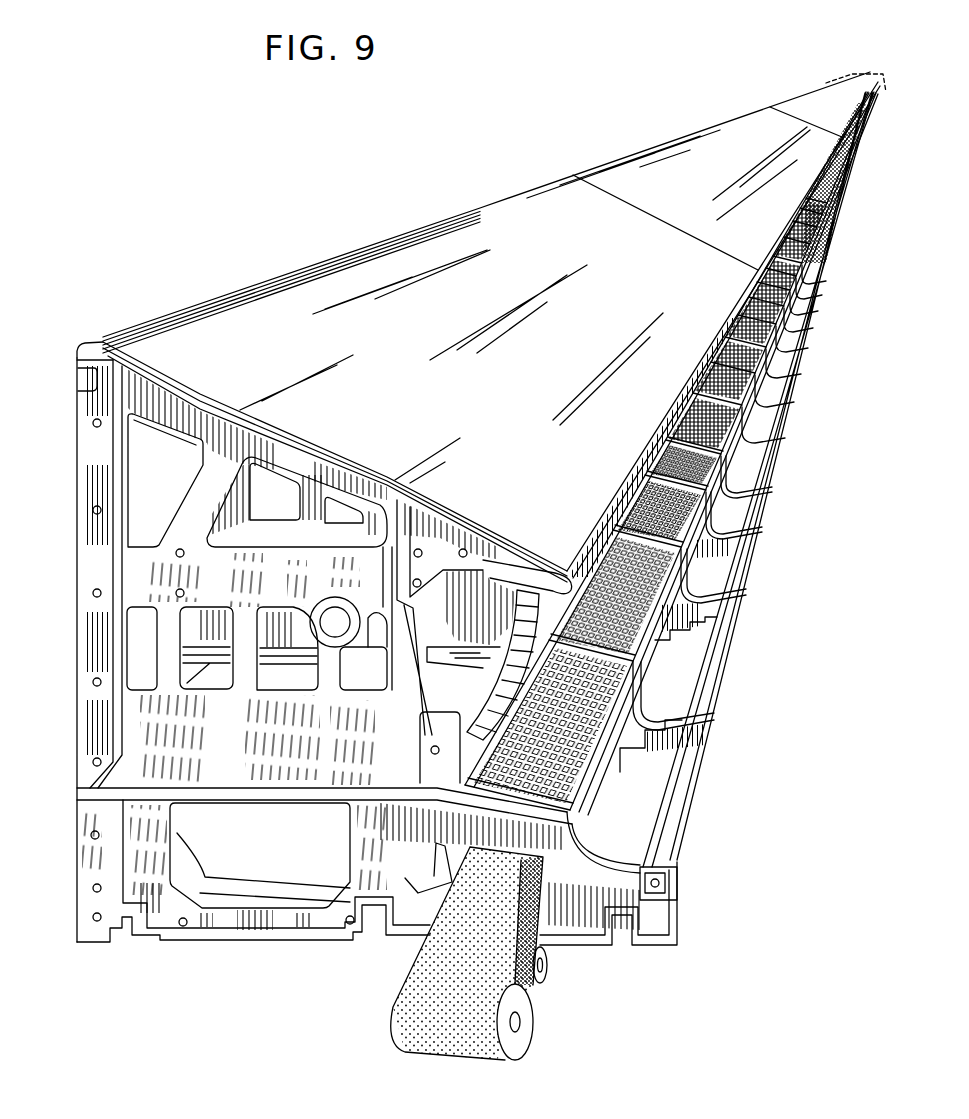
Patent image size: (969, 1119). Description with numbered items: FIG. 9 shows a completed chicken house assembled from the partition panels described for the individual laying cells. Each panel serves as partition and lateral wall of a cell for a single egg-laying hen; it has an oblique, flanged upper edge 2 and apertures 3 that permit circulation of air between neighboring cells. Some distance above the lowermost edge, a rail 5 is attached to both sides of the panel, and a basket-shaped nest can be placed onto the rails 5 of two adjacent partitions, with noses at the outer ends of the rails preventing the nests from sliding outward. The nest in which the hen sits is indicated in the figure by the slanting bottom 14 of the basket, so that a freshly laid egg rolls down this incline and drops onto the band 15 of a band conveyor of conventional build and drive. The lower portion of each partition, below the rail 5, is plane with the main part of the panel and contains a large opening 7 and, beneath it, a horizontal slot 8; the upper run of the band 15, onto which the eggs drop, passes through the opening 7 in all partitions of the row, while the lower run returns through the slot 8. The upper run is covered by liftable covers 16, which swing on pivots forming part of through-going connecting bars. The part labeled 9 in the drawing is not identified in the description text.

The flanged upper edge 2 is at (118, 360).
The side post 9 is at (77, 545).
The apertures 3 is at (199, 525).
The rail 5 is at (222, 768).
The slanting bottom 14 is at (277, 873).
The band 15 is at (413, 983).
The large opening 7 is at (434, 868).
The horizontal slot 8 is at (547, 935).
The liftable covers 16 is at (592, 793).